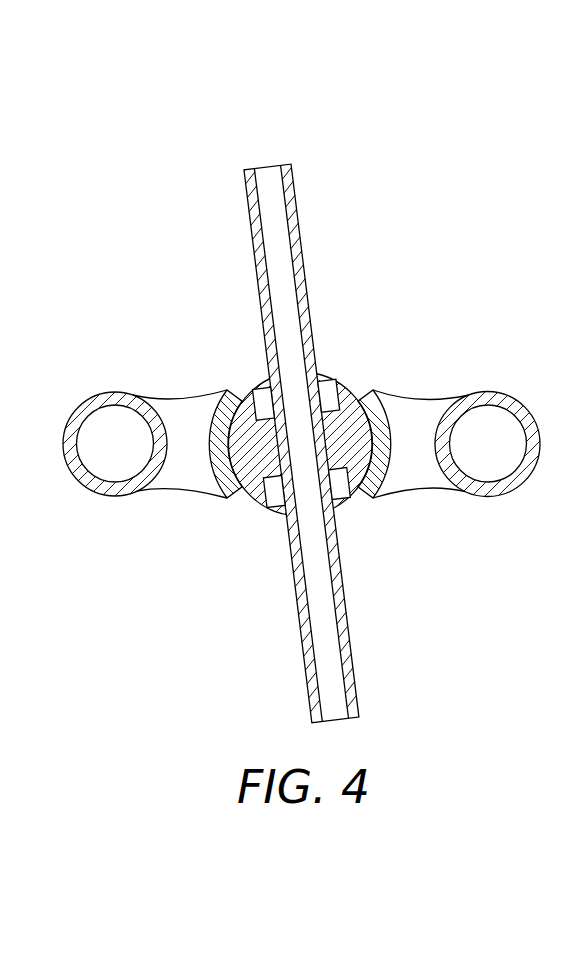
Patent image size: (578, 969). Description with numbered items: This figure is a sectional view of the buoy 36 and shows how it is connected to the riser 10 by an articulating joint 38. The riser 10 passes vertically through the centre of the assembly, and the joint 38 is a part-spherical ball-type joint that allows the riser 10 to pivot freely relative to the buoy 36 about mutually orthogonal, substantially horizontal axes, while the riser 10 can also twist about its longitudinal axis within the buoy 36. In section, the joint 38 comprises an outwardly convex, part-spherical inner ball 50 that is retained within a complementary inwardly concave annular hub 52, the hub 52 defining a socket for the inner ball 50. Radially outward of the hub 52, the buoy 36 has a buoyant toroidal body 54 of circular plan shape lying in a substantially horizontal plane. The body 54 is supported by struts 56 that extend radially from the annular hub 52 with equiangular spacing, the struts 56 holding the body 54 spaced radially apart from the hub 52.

The riser 10 is at (297, 217).
The buoy 36 is at (185, 444).
The articulating joint 38 is at (219, 514).
The inner ball 50 is at (353, 398).
The annular hub 52 is at (387, 477).
The buoyant toroidal body 54 is at (429, 466).
The struts 56 is at (226, 469).